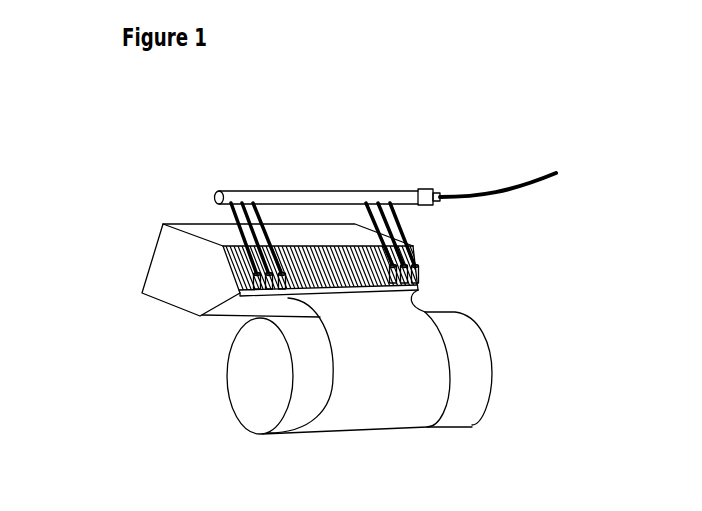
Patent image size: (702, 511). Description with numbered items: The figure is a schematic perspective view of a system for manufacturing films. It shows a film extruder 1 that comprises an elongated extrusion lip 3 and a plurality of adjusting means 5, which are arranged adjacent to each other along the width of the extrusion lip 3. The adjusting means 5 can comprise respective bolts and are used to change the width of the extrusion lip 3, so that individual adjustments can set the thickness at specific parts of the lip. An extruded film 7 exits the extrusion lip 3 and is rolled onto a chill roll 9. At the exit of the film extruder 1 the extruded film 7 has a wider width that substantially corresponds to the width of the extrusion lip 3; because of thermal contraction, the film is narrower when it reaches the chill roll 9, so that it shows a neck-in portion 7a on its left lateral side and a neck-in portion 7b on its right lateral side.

The film extruder 1 is at (165, 270).
The extrusion lip 3 is at (420, 272).
The adjusting means 5 is at (233, 244).
The extruded film 7 is at (383, 352).
The neck-in portion 7a is at (290, 302).
The neck-in portion 7b is at (425, 312).
The chill roll 9 is at (462, 395).